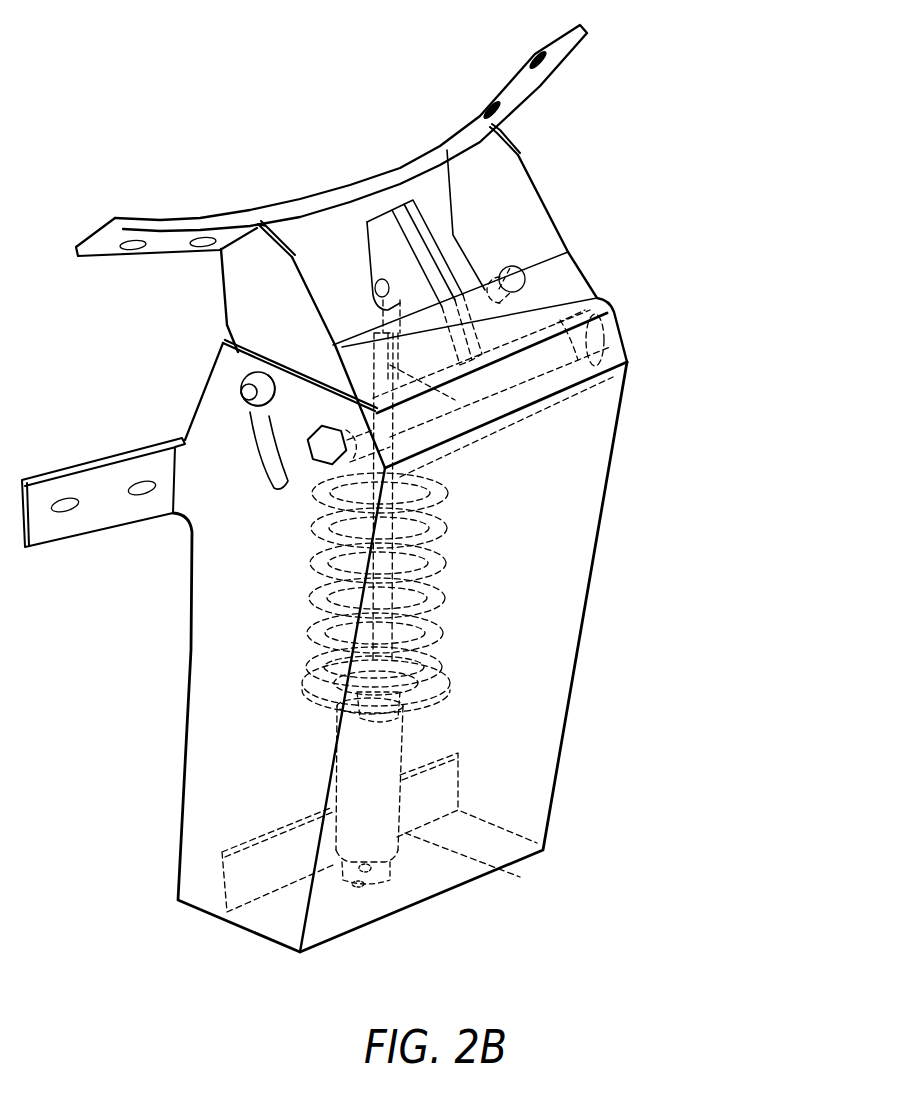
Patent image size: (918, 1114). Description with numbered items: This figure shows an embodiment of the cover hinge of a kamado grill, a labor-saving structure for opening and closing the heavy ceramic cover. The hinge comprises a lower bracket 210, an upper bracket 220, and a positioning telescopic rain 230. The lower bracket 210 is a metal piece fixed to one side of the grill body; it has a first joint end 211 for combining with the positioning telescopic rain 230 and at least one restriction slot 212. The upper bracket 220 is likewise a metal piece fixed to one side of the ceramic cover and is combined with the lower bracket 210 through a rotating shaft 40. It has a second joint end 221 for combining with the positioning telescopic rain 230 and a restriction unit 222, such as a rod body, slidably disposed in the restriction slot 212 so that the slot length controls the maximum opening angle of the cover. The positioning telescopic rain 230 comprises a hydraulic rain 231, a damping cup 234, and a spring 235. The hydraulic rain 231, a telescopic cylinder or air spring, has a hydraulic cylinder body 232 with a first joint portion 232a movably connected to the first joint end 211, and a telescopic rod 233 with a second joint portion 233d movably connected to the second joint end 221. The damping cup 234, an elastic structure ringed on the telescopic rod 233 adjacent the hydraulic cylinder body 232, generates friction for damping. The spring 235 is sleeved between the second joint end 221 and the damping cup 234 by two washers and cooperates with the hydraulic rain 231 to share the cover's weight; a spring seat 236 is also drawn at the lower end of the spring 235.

The rotating shaft 40 is at (563, 307).
The lower bracket 210 is at (366, 659).
The first joint end 211 is at (358, 888).
The restriction slot 212 is at (270, 457).
The upper bracket 220 is at (240, 289).
The second joint end 221 is at (380, 230).
The restriction unit 222 is at (245, 392).
The positioning telescopic rain 230 is at (590, 616).
The hydraulic rain 231 is at (593, 621).
The hydraulic cylinder body 232 is at (463, 815).
The first joint portion 232a is at (388, 868).
The telescopic rod 233 is at (458, 396).
The second joint portion 233d is at (379, 280).
The damping cup 234 is at (405, 712).
The spring 235 is at (445, 572).
The spring seat 236 is at (445, 667).